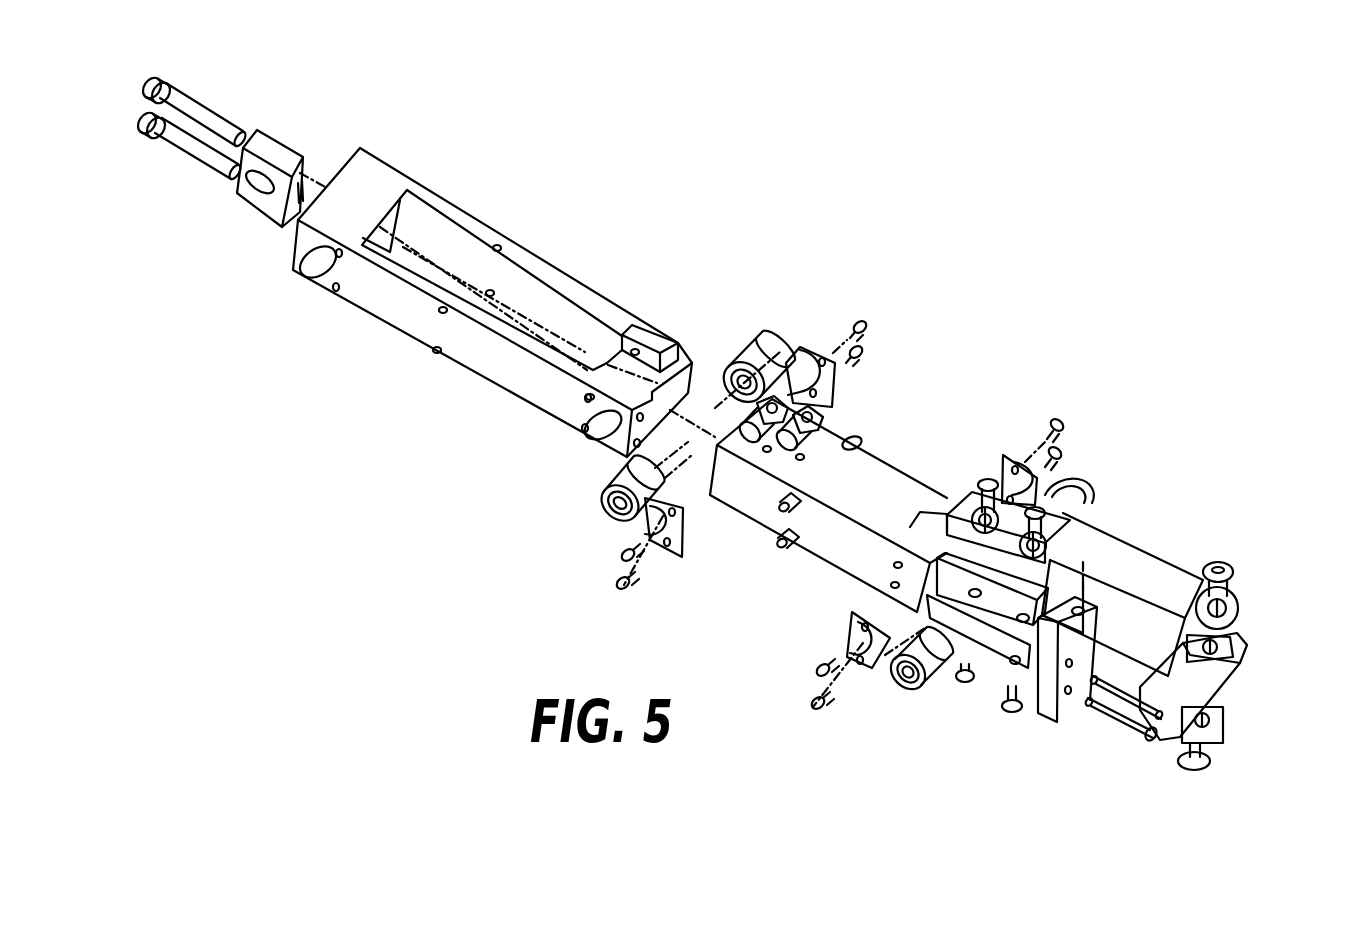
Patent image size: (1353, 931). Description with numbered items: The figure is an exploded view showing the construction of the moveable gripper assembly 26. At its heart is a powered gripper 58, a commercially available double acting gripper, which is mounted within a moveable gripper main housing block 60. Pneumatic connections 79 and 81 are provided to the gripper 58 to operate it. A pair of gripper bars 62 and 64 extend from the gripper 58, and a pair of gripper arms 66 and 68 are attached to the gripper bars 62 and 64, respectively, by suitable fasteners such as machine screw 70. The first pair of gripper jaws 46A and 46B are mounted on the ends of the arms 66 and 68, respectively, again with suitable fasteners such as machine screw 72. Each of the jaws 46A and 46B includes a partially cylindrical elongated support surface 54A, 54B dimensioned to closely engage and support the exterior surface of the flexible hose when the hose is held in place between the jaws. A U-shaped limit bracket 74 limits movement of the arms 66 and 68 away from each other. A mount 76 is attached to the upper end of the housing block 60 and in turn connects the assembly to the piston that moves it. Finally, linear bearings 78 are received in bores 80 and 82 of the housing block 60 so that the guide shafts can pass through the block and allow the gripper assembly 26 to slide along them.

The moveable gripper assembly 26 is at (758, 172).
The gripper jaw 46A is at (1182, 695).
The gripper jaw 46B is at (1163, 747).
The partially cylindrical elongated support surface 54A is at (1132, 727).
The partially cylindrical elongated support surface 54B is at (1147, 737).
The powered gripper 58 is at (880, 483).
The moveable gripper main housing block 60 is at (380, 180).
The gripper bar 62 is at (1073, 560).
The gripper bar 64 is at (1013, 620).
The gripper arm 66 is at (1157, 563).
The gripper arm 68 is at (1110, 673).
The machine screw 70 is at (1040, 513).
The machine screw 72 is at (1233, 570).
The U-shaped limit bracket 74 is at (1047, 713).
The mount 76 is at (267, 167).
The linear bearing 78 is at (742, 342).
The pneumatic connection 79 is at (750, 430).
The bore 80 is at (318, 262).
The pneumatic connection 81 is at (783, 437).
The bore 82 is at (603, 427).